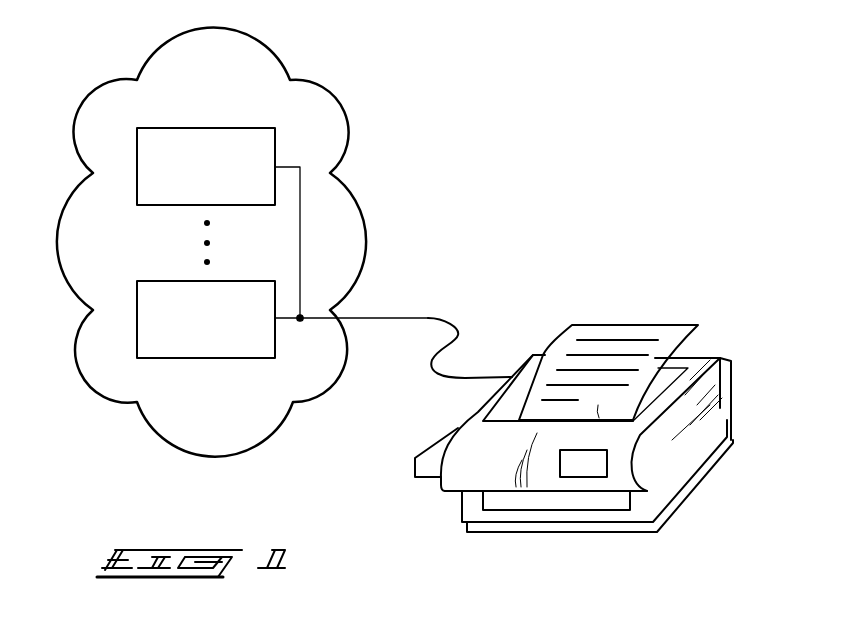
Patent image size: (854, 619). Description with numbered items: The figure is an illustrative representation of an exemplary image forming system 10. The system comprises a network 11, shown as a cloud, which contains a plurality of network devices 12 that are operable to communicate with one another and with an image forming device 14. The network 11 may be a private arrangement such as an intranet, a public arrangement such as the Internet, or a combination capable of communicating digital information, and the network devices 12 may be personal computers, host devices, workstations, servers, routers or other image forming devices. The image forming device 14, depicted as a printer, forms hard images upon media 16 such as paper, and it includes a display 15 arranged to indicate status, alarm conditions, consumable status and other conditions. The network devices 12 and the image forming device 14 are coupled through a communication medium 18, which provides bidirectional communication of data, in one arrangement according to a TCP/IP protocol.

The image forming system 10 is at (538, 140).
The network 11 is at (258, 37).
The network devices 12 is at (168, 280).
The image forming device 14 is at (684, 506).
The display 15 is at (583, 463).
The media 16 is at (648, 323).
The communication medium 18 is at (442, 317).